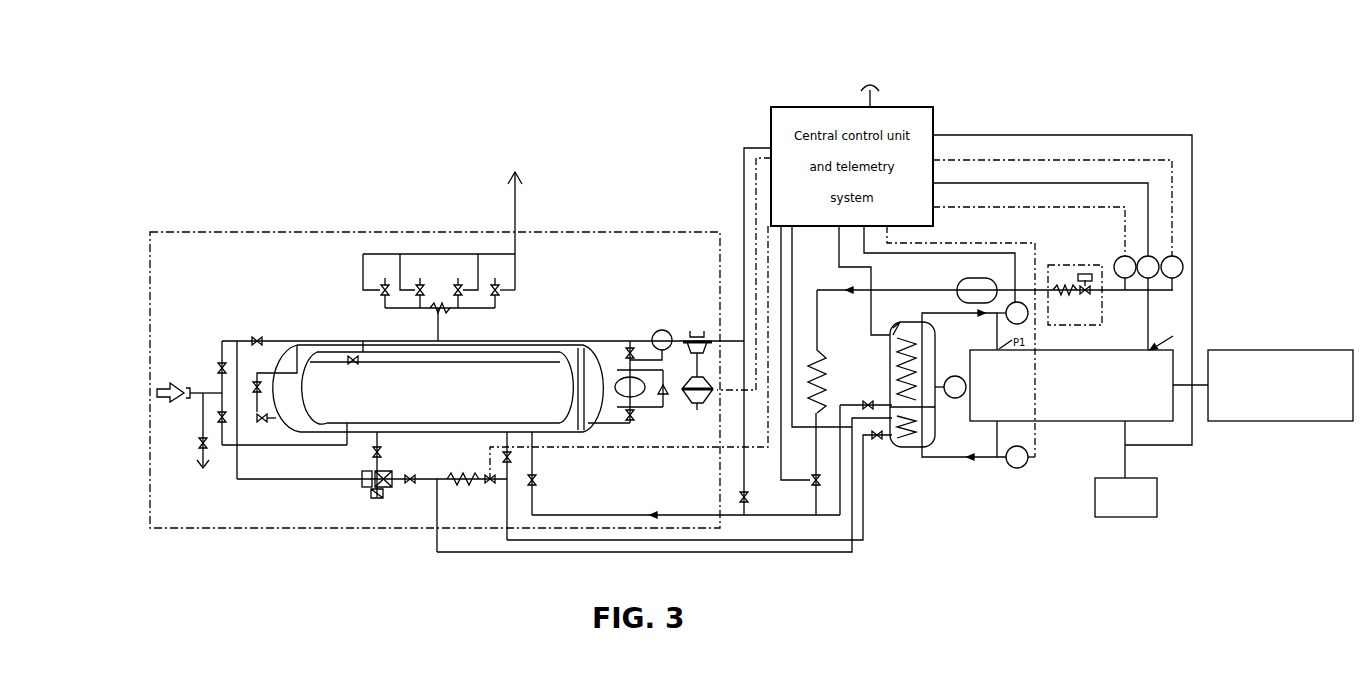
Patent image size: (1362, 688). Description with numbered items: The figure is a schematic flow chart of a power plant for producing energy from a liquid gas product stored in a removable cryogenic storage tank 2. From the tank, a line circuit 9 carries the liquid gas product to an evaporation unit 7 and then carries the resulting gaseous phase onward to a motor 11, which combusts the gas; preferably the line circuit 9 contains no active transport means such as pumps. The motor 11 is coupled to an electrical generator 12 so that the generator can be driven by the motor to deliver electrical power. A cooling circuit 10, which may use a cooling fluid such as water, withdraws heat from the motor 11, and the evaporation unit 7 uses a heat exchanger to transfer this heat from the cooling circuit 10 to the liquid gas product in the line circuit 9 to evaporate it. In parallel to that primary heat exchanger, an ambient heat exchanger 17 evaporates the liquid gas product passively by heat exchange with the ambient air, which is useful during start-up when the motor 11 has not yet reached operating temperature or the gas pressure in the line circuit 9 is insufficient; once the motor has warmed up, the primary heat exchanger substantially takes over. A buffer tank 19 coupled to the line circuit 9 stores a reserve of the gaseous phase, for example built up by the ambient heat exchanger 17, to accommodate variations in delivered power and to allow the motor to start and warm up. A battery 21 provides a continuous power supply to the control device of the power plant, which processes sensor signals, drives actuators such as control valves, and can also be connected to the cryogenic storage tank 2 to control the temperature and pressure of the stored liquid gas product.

The cryogenic storage tank 2 is at (174, 282).
The evaporation unit 7 is at (900, 443).
The line circuit 9 is at (937, 290).
The cooling circuit 10 is at (978, 457).
The motor 11 is at (1071, 402).
The electrical generator 12 is at (1264, 402).
The ambient heat exchanger 17 is at (818, 410).
The buffer tank 19 is at (985, 271).
The battery 21 is at (1157, 517).